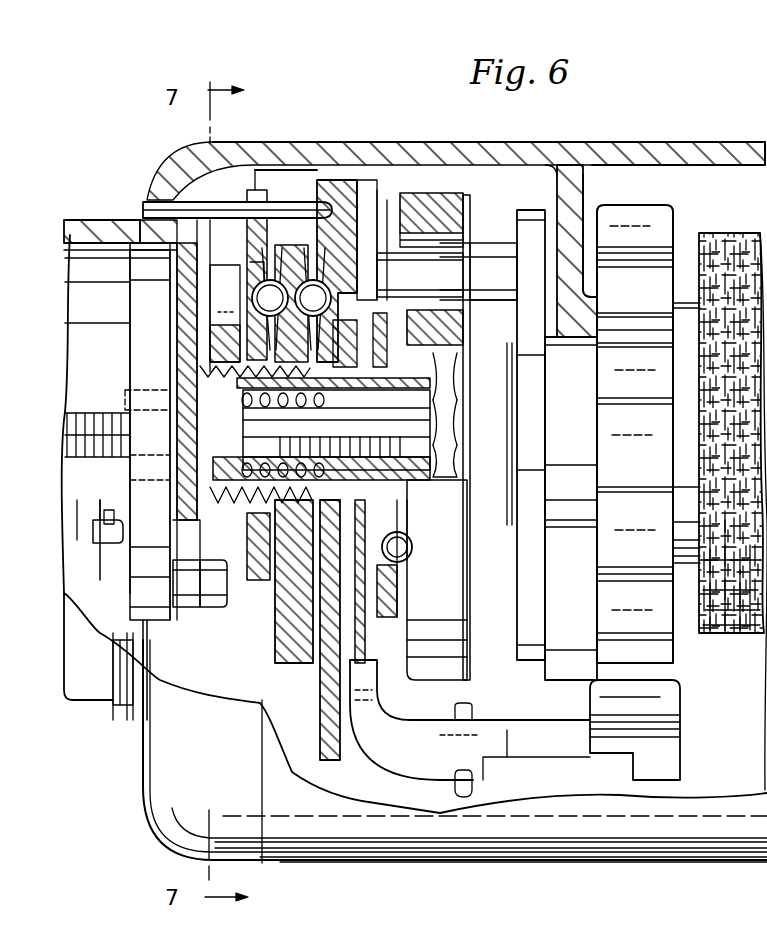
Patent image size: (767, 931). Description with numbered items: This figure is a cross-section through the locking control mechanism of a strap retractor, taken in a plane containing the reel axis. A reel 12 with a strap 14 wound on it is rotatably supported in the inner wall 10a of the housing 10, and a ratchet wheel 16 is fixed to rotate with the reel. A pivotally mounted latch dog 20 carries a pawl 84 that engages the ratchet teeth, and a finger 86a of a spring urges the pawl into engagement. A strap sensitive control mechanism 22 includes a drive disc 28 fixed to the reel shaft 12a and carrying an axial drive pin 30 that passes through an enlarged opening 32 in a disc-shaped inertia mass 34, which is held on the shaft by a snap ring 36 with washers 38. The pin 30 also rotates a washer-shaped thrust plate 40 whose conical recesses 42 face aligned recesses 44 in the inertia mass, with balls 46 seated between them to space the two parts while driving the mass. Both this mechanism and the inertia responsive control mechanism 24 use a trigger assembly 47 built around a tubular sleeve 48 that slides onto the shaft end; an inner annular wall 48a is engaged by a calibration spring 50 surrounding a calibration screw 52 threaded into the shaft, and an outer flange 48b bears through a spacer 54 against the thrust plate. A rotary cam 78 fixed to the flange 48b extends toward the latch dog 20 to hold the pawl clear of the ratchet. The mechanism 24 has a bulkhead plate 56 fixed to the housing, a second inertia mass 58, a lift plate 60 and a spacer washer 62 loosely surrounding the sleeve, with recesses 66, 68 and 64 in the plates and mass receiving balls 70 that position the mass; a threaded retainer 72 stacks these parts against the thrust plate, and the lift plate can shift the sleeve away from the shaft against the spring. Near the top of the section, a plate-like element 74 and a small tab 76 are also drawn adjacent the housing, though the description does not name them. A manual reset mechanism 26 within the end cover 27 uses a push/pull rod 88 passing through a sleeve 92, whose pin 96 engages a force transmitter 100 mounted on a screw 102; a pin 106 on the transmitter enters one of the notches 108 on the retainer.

The housing 10 is at (637, 145).
The housing inner wall 10a is at (585, 195).
The reel 12 is at (585, 436).
The reel shaft 12a is at (445, 457).
The strap 14 is at (732, 240).
The ratchet wheel 16 is at (655, 225).
The latch dog 20 is at (380, 683).
The strap sensitive control mechanism 22 is at (450, 166).
The inertia responsive control mechanism 24 is at (293, 188).
The manual reset mechanism 26 is at (113, 600).
The end cover 27 is at (75, 222).
The drive disc 28 is at (538, 640).
The drive pin 30 is at (483, 265).
The enlarged opening 32 is at (470, 210).
The inertia mass 34 is at (420, 193).
The snap ring 36 is at (465, 340).
The washers 38 is at (447, 400).
The thrust plate 40 is at (365, 615).
The recesses 42 is at (412, 580).
The conical recesses 44 is at (412, 547).
The balls 46 is at (415, 562).
The trip or trigger assembly 47 is at (330, 558).
The tubular sleeve 48 is at (323, 553).
The annular wall 48a is at (333, 427).
The outwardly extending flange 48b is at (383, 296).
The calibration spring 50 is at (225, 460).
The calibration screw 52 is at (442, 430).
The spacer 54 is at (385, 323).
The bulkhead plate 56 is at (340, 185).
The inertia mass 58 is at (270, 640).
The lift plate 60 is at (247, 242).
The spacer washer 62 is at (215, 355).
The recesses 64 is at (286, 262).
The recesses 66 is at (355, 295).
The recesses 68 is at (252, 272).
The balls 70 is at (262, 298).
The retainer 72 is at (213, 367).
The bracket plate 74 is at (155, 203).
The tab 76 is at (253, 190).
The rotary cam 78 is at (340, 640).
The pawl 84 is at (680, 692).
The finger 86a is at (470, 795).
The push/pull rod 88 is at (85, 556).
The sleeve 92 is at (125, 682).
The pin 96 is at (108, 520).
The force transmitter 100 is at (157, 622).
The screw 102 is at (70, 430).
The pin 106 is at (205, 600).
The notches 108 is at (227, 585).